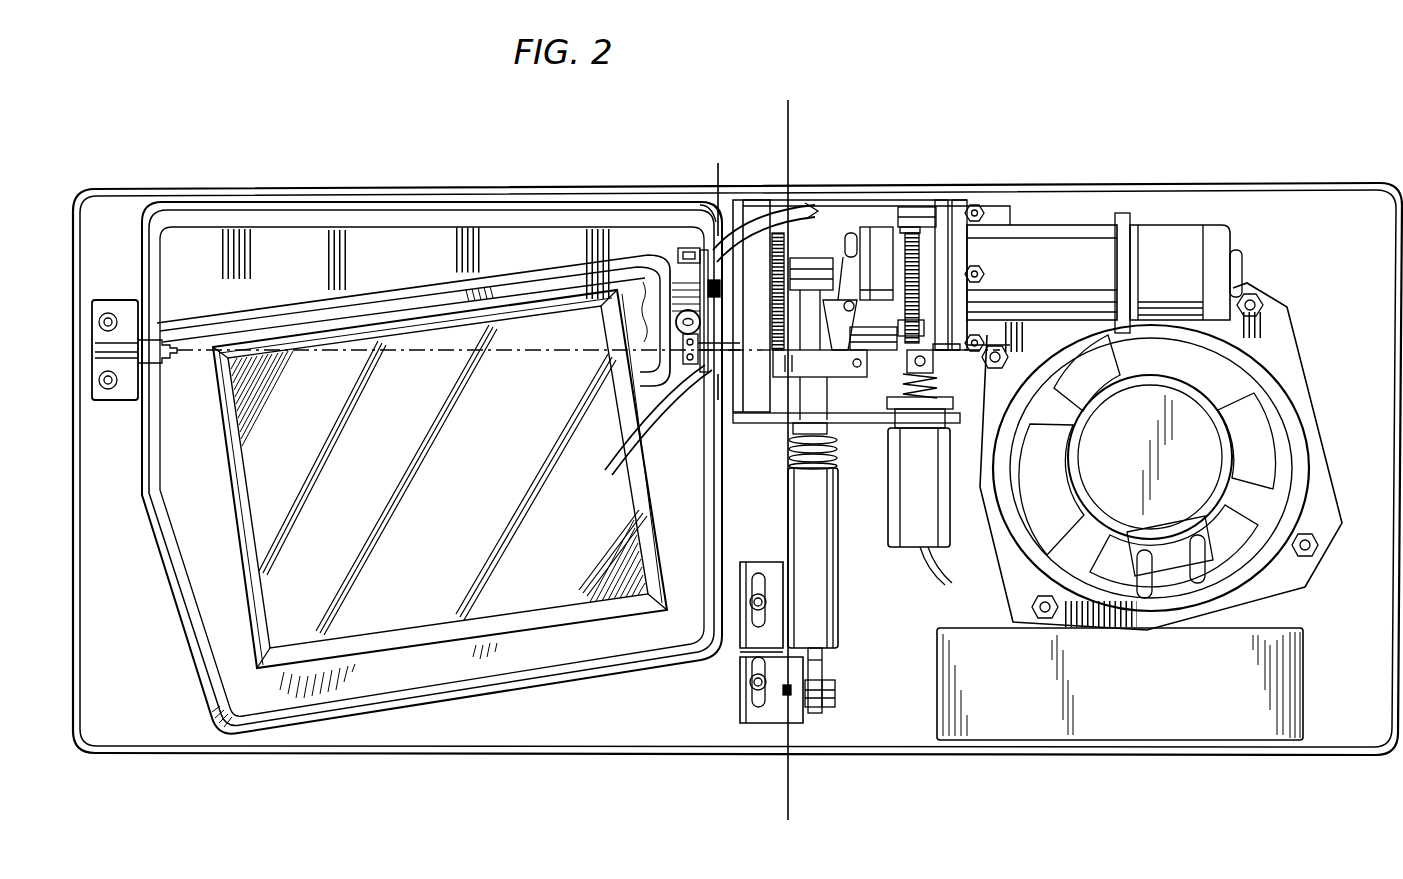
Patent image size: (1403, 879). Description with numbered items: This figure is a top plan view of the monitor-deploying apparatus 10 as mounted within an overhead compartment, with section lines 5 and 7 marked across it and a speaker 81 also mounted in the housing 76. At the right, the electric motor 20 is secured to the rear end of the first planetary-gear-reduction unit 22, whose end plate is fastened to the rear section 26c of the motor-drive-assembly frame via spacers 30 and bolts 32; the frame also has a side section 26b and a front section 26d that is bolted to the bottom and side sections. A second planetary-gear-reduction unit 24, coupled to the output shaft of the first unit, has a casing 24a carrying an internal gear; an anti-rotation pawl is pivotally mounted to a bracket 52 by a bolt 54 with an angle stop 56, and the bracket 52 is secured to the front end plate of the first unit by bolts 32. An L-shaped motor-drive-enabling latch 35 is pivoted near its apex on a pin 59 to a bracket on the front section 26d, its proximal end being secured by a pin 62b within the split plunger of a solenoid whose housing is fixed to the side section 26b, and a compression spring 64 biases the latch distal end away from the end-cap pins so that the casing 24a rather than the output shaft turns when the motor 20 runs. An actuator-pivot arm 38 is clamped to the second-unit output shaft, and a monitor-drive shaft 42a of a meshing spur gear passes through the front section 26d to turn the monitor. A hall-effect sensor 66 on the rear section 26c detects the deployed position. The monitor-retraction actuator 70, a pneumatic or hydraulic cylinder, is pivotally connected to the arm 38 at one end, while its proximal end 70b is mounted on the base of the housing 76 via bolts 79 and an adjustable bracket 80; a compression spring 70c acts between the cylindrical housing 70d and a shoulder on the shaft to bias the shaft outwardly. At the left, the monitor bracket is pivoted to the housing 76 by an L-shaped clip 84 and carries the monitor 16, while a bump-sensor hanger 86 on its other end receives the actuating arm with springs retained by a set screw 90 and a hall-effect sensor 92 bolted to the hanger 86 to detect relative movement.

The section line 5- 5 is at (784, 125).
The section line 7- 7 is at (722, 170).
The apparatus 10 is at (1050, 174).
The display panel 16 is at (440, 479).
The electric motor 20 is at (1166, 232).
The first planetary-gear-reduction unit 22 is at (1048, 273).
The second planetary-gear-reduction unit 24 is at (845, 300).
The casing 24a is at (875, 288).
The side section 26b is at (888, 460).
The rear section 26c is at (966, 300).
The front section 26d is at (716, 230).
The spacers 30 is at (946, 215).
The bolts 32 is at (980, 205).
The motor-drive-enabling latch 35 is at (850, 233).
The actuator-pivot arm 38 is at (810, 258).
The monitor-drive shaft 42a is at (690, 398).
The bracket 52 is at (926, 210).
The bolt 54 is at (908, 233).
The angle stop 56 is at (913, 207).
The pin 59 is at (830, 380).
The pin 62b is at (935, 370).
The compression spring 64 is at (925, 380).
The hall-effect sensor 66 is at (898, 395).
The monitor-retraction actuator 70 is at (819, 585).
The proximal end 70b is at (816, 713).
The compression spring 70c is at (790, 450).
The cylindrical housing 70d is at (813, 535).
The housing 76 is at (1333, 200).
The bolts 79 is at (838, 683).
The adjustable bracket 80 is at (738, 690).
The speaker 81 is at (1161, 456).
The L-shaped clip 84 is at (108, 300).
The bump-sensor hanger 86 is at (678, 280).
The set screw 90 is at (678, 319).
The hall-effect sensor 92 is at (712, 243).